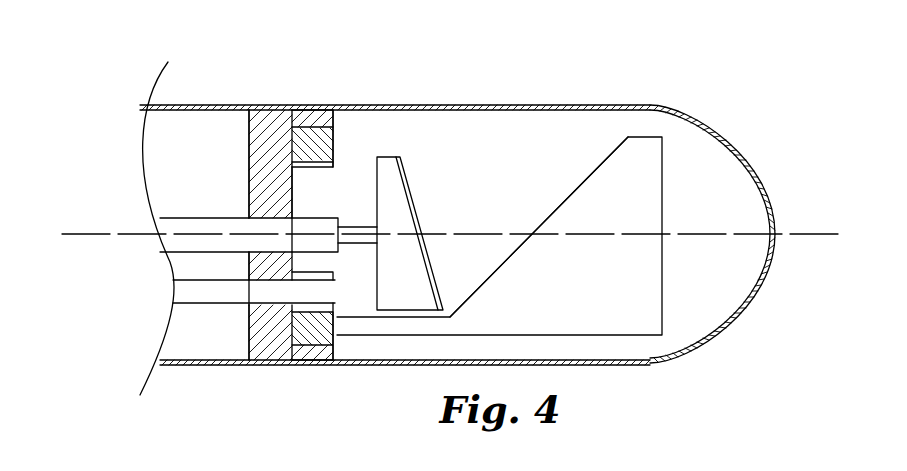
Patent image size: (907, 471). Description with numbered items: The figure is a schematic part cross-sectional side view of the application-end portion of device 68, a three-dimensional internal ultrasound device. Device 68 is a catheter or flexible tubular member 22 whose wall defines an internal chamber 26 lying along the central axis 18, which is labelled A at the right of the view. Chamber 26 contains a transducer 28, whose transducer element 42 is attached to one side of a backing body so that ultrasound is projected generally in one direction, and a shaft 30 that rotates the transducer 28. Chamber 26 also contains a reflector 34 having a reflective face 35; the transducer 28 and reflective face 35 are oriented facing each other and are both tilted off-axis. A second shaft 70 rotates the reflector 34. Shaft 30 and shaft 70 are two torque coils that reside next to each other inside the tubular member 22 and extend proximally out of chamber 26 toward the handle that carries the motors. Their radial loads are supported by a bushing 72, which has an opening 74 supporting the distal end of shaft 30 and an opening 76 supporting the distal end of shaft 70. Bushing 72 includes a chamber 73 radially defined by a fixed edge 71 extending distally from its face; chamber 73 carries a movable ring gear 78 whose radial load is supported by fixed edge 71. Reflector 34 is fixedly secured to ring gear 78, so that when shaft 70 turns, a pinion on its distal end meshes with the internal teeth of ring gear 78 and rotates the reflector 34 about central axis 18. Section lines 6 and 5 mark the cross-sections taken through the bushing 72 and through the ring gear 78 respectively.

The section line 5 is at (292, 93).
The section line 6 is at (249, 93).
The central axis 18 is at (822, 232).
The tubular member 22 is at (203, 105).
The internal chamber 26 is at (550, 142).
The transducer 28 is at (422, 191).
The shaft 30 is at (210, 218).
The reflector 34 is at (593, 295).
The reflective face 35 is at (605, 158).
The transducer element 42 is at (408, 173).
The device 68 is at (636, 90).
The shaft 70 is at (202, 295).
The fixed edge 71 is at (333, 348).
The bushing 72 is at (257, 328).
The chamber 73 is at (309, 208).
The opening 74 is at (249, 218).
The opening 76 is at (248, 306).
The ring gear 78 is at (334, 145).
The axis A is at (795, 236).